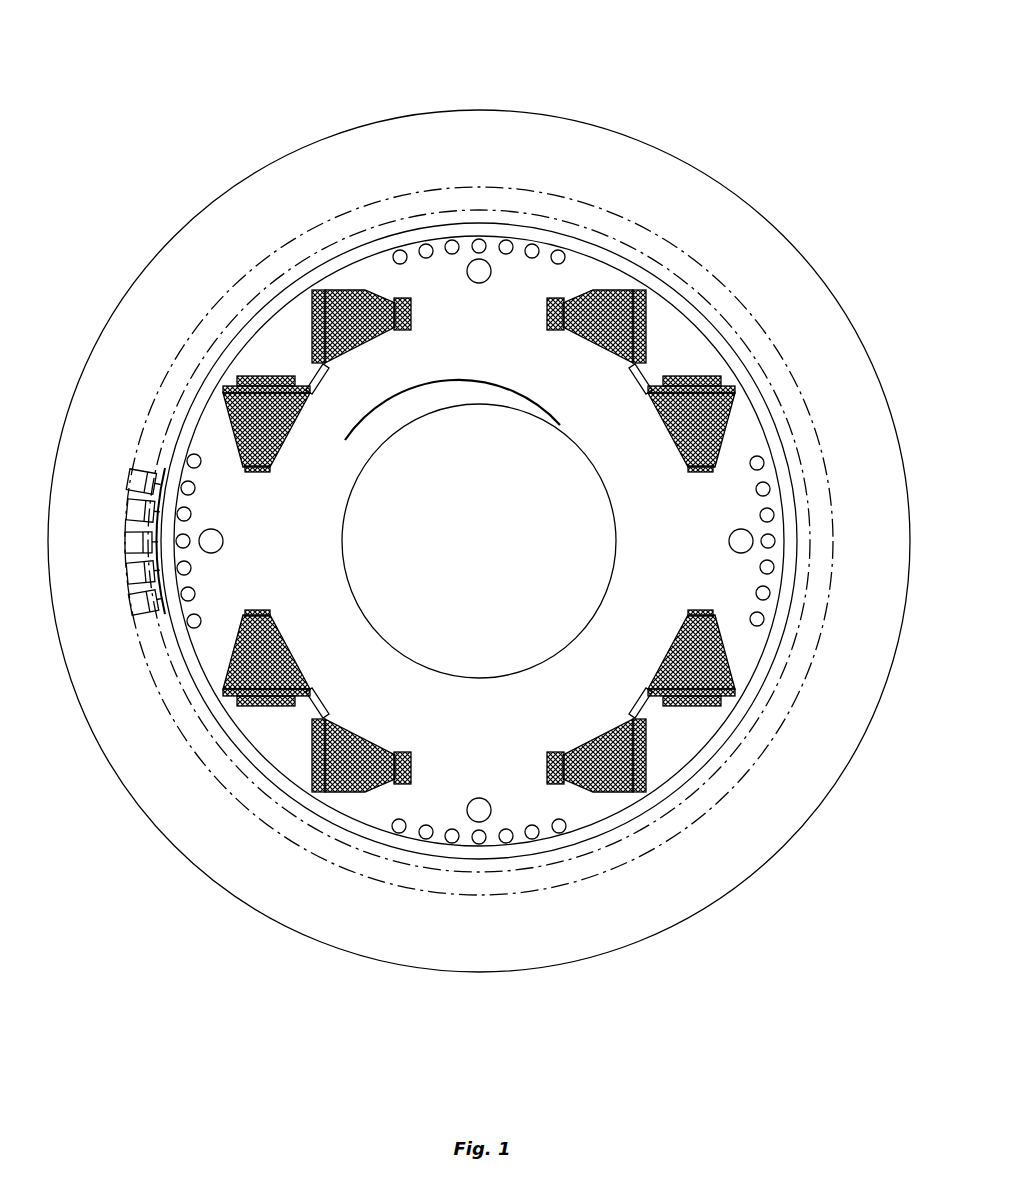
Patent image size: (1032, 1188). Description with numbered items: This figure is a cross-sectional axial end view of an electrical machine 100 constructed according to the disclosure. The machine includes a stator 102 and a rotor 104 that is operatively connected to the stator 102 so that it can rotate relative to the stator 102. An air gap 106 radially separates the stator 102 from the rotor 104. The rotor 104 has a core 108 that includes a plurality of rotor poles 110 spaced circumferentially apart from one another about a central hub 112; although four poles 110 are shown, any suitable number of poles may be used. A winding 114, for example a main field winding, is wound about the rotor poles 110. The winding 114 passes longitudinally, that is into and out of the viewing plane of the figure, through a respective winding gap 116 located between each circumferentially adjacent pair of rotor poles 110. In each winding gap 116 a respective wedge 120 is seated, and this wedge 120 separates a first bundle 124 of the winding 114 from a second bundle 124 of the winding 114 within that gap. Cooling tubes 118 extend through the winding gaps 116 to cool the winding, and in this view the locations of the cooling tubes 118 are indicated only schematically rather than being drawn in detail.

The electrical machine 100 is at (173, 168).
The stator 102 is at (510, 145).
The rotor 104 is at (778, 546).
The air gap 106 is at (580, 248).
The core 108 is at (628, 582).
The rotor poles 110 is at (420, 300).
The hub 112 is at (492, 404).
The winding 114 is at (481, 548).
The winding gap 116 is at (320, 393).
The cooling tubes 118 is at (310, 320).
The wedge 120 is at (262, 351).
The bundle 124 is at (345, 288).